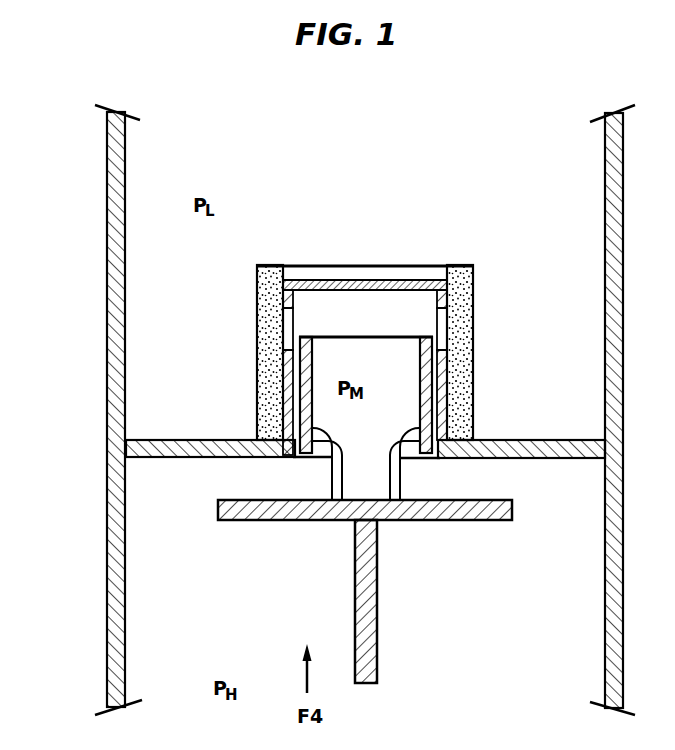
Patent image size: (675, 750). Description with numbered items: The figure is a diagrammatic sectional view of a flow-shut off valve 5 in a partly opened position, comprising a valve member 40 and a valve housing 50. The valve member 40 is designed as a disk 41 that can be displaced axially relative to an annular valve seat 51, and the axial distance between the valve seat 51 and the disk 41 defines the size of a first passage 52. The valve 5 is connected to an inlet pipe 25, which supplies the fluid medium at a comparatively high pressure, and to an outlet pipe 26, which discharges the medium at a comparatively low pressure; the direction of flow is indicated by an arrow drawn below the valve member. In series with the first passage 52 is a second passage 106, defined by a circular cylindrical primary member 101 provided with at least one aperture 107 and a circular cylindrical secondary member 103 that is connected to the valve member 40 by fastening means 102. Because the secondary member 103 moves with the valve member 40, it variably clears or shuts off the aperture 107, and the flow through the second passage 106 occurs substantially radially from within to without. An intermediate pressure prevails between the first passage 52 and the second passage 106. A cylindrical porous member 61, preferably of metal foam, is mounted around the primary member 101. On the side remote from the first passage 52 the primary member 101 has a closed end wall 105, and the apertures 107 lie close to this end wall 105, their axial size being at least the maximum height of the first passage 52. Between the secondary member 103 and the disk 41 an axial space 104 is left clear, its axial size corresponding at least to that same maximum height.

The flow-shut off valve 5 is at (73, 364).
The valve housing 50 is at (132, 388).
The annular valve seat 51 is at (212, 438).
The first passage 52 is at (244, 475).
The cylindrical porous member 61 is at (407, 317).
The primary member 101 is at (448, 412).
The fastening means 102 is at (343, 448).
The secondary member 103 is at (418, 362).
The axial space 104 is at (427, 478).
The closed end wall 105 is at (394, 280).
The second passage 106 is at (286, 316).
The aperture 107 is at (436, 323).
The disk 41 is at (436, 521).
The valve member 40 is at (412, 613).
The outlet pipe 26 is at (515, 215).
The inlet pipe 25 is at (558, 615).